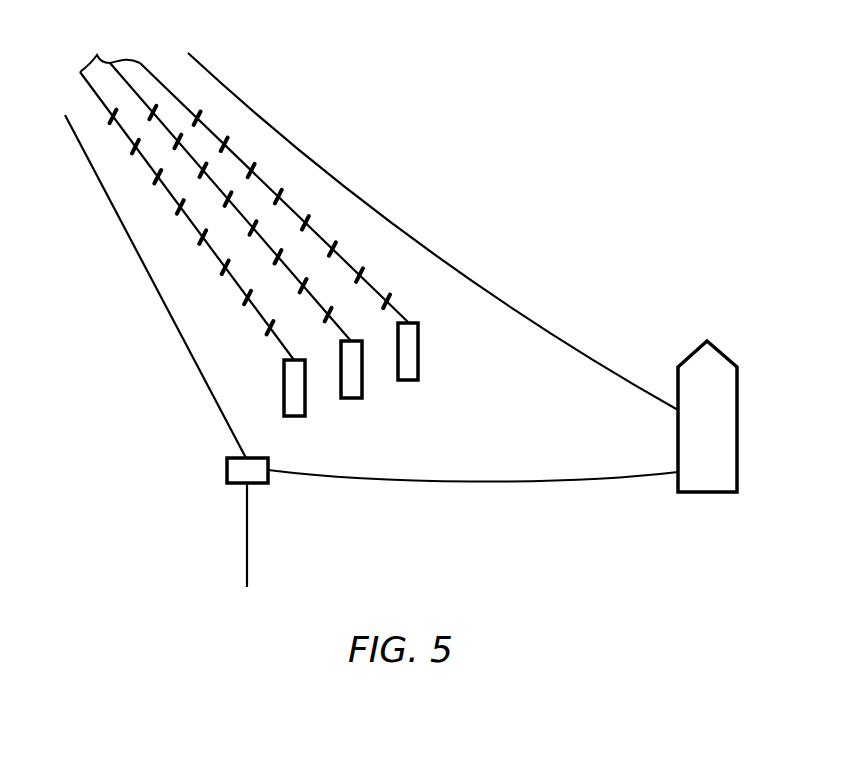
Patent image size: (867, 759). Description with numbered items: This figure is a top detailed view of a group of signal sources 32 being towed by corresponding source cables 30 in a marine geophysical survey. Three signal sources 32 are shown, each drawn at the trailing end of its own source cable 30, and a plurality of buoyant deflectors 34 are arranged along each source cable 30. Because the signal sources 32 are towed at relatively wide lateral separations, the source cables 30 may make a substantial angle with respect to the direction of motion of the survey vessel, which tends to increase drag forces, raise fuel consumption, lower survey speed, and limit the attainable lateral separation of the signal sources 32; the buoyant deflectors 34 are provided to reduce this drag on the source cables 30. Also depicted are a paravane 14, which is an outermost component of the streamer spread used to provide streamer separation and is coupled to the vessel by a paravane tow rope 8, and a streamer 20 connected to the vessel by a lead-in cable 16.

The paravane tow rope 8 is at (357, 197).
The paravane 14 is at (737, 422).
The lead-in cable 16 is at (170, 326).
The streamer 20 is at (247, 546).
The source cable 30 is at (97, 55).
The signal source 32 is at (419, 350).
The buoyant deflector 34 is at (224, 274).